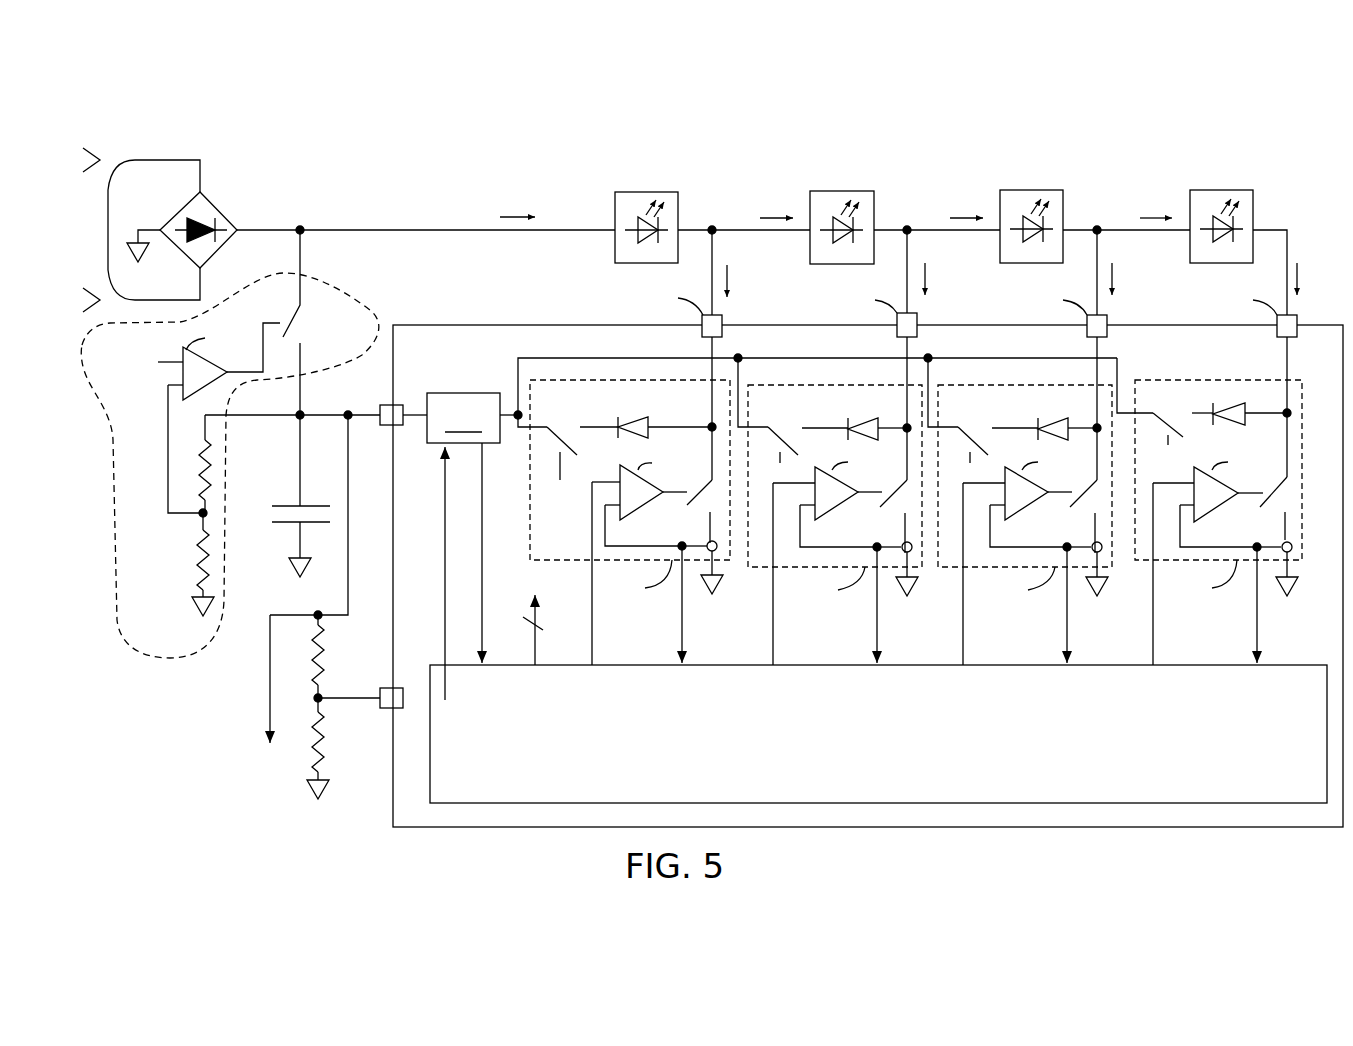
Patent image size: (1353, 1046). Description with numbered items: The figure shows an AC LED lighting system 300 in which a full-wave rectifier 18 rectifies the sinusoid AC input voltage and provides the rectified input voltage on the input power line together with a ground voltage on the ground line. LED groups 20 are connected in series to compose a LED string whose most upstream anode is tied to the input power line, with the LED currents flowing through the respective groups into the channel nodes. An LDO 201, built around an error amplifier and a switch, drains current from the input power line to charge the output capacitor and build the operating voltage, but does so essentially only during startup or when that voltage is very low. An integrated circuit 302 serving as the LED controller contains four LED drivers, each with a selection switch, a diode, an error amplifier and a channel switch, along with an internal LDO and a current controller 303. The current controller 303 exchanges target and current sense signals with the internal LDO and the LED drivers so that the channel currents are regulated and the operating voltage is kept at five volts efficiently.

The AC LED lighting system 300 is at (502, 146).
The full-wave rectifier 18 is at (208, 197).
The LDO 201 is at (372, 300).
The LED groups 20 is at (648, 192).
The integrated circuit 302 is at (447, 375).
The current controller 303 is at (997, 759).